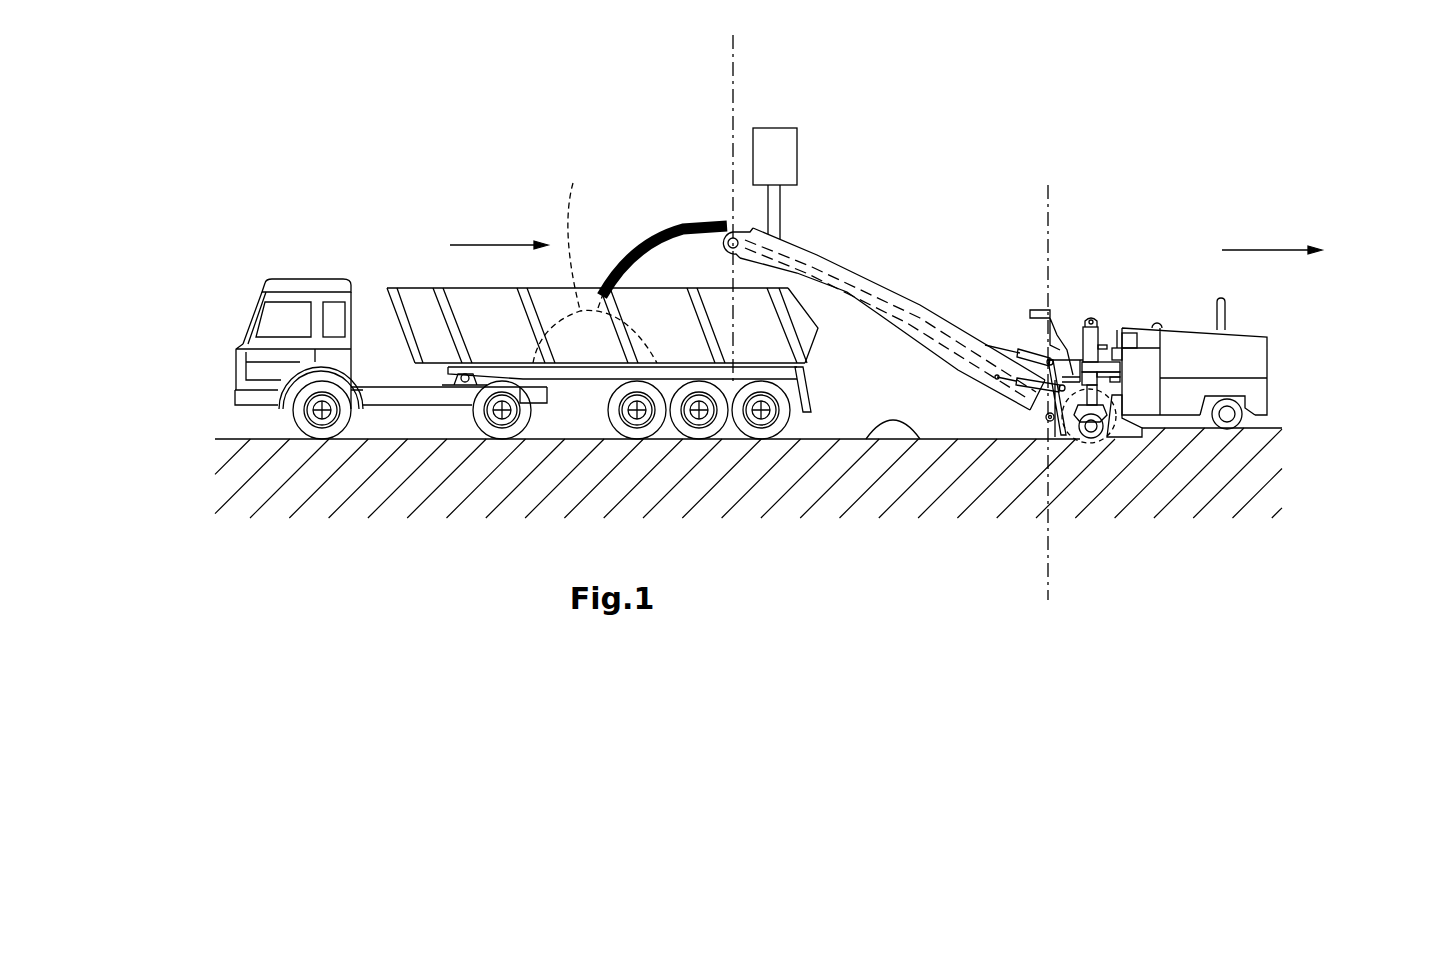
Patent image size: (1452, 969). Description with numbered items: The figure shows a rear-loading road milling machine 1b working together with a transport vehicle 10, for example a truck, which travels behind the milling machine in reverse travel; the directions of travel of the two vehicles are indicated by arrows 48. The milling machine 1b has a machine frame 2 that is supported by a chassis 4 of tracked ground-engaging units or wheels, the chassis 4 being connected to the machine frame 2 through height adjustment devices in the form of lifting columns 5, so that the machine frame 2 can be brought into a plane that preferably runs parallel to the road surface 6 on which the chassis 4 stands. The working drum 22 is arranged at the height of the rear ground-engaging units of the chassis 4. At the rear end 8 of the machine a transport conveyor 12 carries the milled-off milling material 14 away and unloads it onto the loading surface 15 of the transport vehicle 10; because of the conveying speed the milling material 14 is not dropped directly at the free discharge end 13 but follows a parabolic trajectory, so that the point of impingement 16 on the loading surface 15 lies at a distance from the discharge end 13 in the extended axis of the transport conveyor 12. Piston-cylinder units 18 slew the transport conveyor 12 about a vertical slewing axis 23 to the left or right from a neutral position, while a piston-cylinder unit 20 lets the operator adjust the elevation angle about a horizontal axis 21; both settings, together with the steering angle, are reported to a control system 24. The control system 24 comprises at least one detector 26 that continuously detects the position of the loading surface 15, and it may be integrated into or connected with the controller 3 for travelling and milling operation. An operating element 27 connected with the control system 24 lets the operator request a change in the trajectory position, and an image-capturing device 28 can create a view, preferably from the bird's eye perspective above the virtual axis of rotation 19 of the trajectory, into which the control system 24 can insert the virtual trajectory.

The rear-loading milling machine 1b is at (1104, 300).
The machine frame 2 is at (1240, 352).
The controller 3 is at (1158, 277).
The chassis 4 is at (1279, 419).
The lifting columns 5 is at (1040, 350).
The road surface 6 is at (920, 440).
The rear end 8 is at (1010, 302).
The transport vehicle 10 is at (365, 245).
The transport conveyor 12 is at (872, 244).
The discharge end 13 is at (725, 203).
The milling material 14 is at (650, 242).
The loading surface 15 is at (480, 363).
The point of impingement 16 is at (595, 260).
The piston-cylinder units 18 is at (1035, 420).
The virtual axis of rotation 19 is at (733, 70).
The piston-cylinder unit 20 is at (995, 350).
The horizontal axis 21 is at (1047, 422).
The working drum 22 is at (1128, 440).
The vertical slewing axis 23 is at (1052, 568).
The control system 24 is at (1116, 350).
The detector 26 is at (807, 153).
The operating element 27 is at (1138, 327).
The image-capturing device 28 is at (780, 143).
The arrows 48 is at (468, 245).